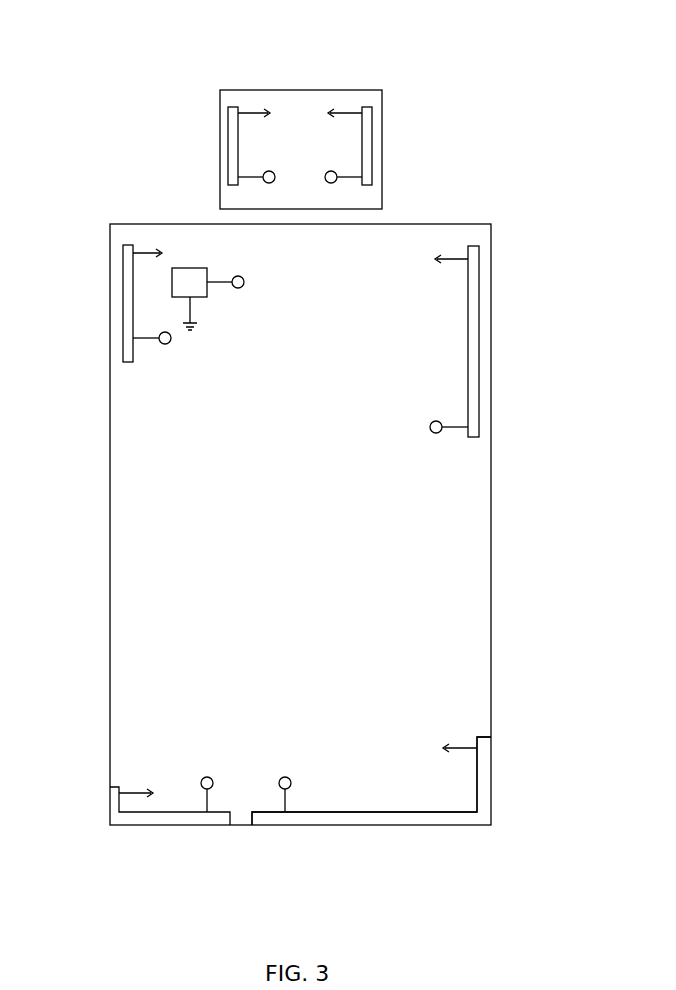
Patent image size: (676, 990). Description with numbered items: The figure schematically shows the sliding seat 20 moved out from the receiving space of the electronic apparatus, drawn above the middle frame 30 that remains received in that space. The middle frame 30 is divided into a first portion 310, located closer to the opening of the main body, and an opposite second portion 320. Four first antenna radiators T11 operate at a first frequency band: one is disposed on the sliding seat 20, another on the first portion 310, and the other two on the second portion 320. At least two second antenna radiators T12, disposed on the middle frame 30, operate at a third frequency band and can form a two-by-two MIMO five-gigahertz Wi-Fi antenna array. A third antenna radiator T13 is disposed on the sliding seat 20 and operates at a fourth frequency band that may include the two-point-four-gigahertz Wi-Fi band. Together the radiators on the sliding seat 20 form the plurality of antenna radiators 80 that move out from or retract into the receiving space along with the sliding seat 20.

The middle frame 30 is at (140, 540).
The sliding seat 20 is at (373, 195).
The antenna radiators 80 is at (295, 96).
The first antenna radiator T11 is at (365, 108).
The second antenna radiator T12 is at (190, 278).
The third antenna radiator T13 is at (255, 113).
The first portion 310 is at (295, 265).
The second portion 320 is at (423, 715).